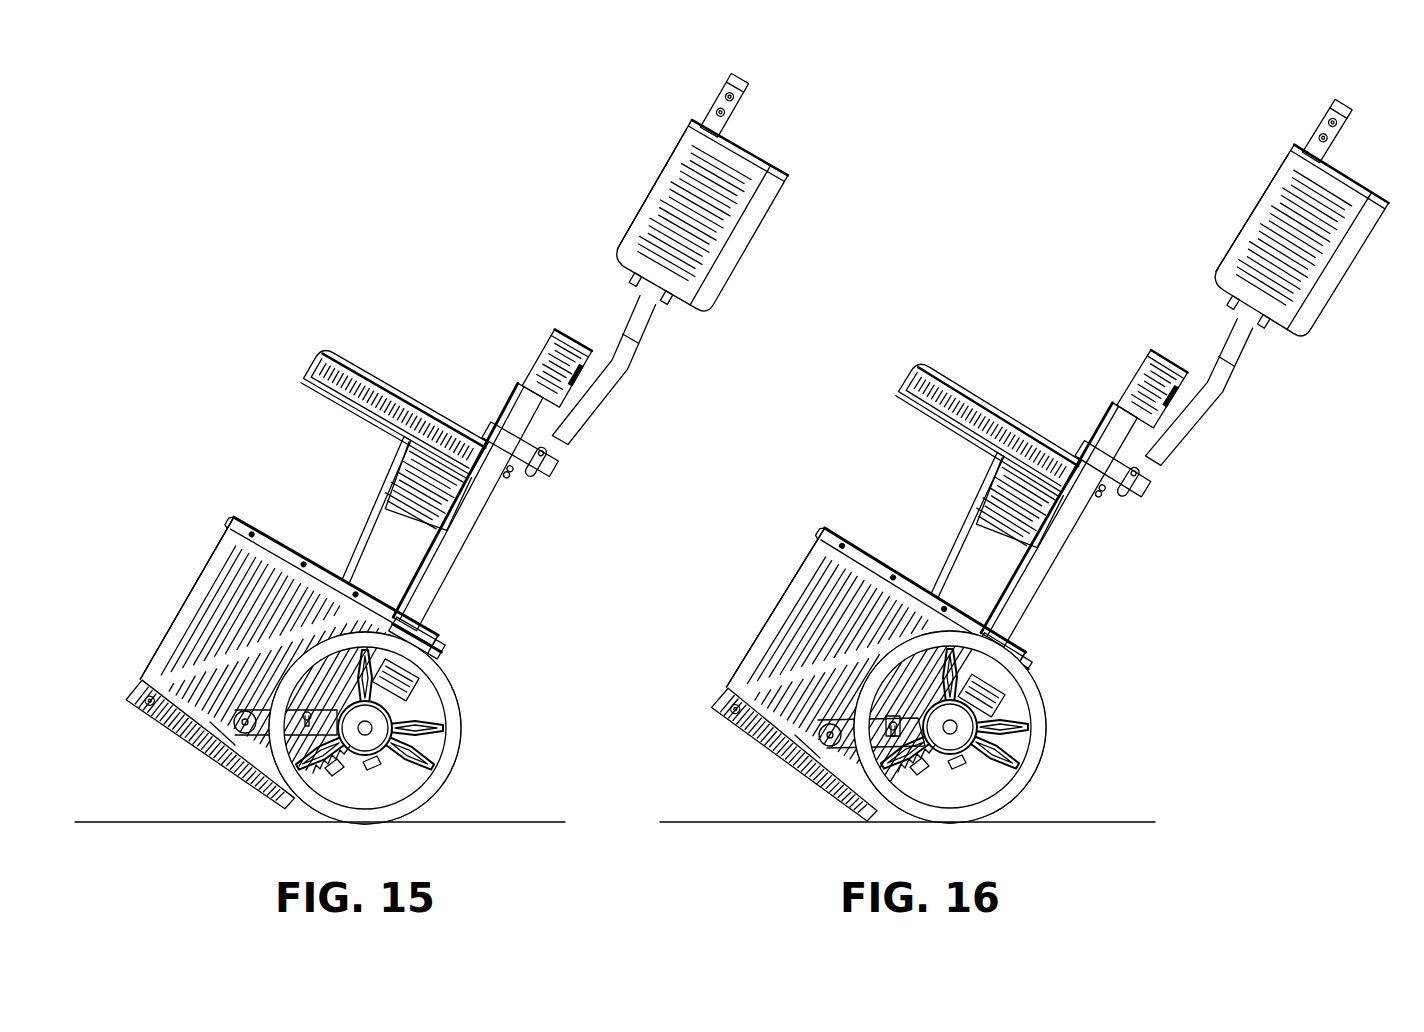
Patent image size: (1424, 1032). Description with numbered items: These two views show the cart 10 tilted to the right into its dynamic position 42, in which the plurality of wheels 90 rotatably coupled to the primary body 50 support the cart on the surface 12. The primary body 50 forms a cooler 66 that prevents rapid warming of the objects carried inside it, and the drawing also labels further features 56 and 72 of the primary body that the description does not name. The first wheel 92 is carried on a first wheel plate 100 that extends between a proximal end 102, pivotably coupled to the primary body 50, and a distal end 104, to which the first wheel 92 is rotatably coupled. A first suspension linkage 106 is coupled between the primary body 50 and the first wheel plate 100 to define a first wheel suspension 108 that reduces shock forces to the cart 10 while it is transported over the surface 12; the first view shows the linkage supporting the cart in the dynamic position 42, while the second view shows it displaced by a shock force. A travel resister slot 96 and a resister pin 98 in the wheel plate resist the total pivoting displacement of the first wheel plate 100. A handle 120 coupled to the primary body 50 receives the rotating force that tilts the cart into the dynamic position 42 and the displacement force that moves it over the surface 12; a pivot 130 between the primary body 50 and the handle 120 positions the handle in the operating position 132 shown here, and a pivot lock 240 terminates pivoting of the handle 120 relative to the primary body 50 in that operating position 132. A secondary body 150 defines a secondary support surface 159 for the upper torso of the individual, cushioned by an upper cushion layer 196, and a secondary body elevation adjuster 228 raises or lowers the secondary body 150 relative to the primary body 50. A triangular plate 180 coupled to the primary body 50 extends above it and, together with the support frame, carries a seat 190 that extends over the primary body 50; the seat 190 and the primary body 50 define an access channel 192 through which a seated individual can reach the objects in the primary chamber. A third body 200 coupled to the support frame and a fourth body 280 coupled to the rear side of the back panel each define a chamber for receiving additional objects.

In FIG. 15, the cart 10 is at (314, 63).
In FIG. 16, the cart 10 is at (1047, 63).
In FIG. 15, the surface 12 is at (520, 822).
In FIG. 16, the surface 12 is at (1125, 822).
In FIG. 15, the dynamic position 42 is at (315, 147).
In FIG. 16, the dynamic position 42 is at (1048, 147).
In FIG. 15, the primary body 50 is at (168, 612).
In FIG. 16, the primary body 50 is at (768, 612).
In FIG. 15, the upper edge of panel 56 is at (256, 515).
In FIG. 16, the upper edge of panel 56 is at (840, 528).
In FIG. 15, the cooler 66 is at (197, 566).
In FIG. 16, the cooler 66 is at (797, 575).
In FIG. 15, the toe plate 72 is at (165, 735).
In FIG. 16, the toe plate 72 is at (786, 754).
In FIG. 15, the plurality of wheels 90 is at (460, 752).
In FIG. 16, the plurality of wheels 90 is at (1048, 758).
In FIG. 15, the first wheel 92 is at (462, 703).
In FIG. 16, the first wheel 92 is at (1050, 718).
In FIG. 16, the travel resister slot 96 is at (888, 722).
In FIG. 15, the resister pin 98 is at (307, 719).
In FIG. 16, the resister pin 98 is at (886, 732).
In FIG. 15, the first wheel plate 100 is at (262, 727).
In FIG. 16, the first wheel plate 100 is at (843, 735).
In FIG. 15, the proximal end 102 is at (222, 742).
In FIG. 16, the proximal end 102 is at (815, 742).
In FIG. 15, the distal end 104 is at (300, 775).
In FIG. 16, the distal end 104 is at (916, 758).
In FIG. 15, the first suspension linkage 106 is at (372, 768).
In FIG. 16, the first suspension linkage 106 is at (912, 775).
In FIG. 15, the first wheel suspension 108 is at (340, 767).
In FIG. 16, the first wheel suspension 108 is at (950, 775).
In FIG. 15, the handle 120 is at (725, 88).
In FIG. 16, the handle 120 is at (1333, 112).
In FIG. 15, the pivot 130 is at (548, 452).
In FIG. 16, the pivot 130 is at (1128, 481).
In FIG. 15, the operating position 132 is at (292, 100).
In FIG. 16, the operating position 132 is at (1023, 100).
In FIG. 15, the secondary body 150 is at (727, 282).
In FIG. 16, the secondary body 150 is at (1335, 282).
In FIG. 16, the secondary support surface 159 is at (1240, 220).
In FIG. 16, the triangular plate 180 is at (985, 567).
In FIG. 15, the seat 190 is at (375, 350).
In FIG. 16, the seat 190 is at (977, 396).
In FIG. 15, the access channel 192 is at (300, 429).
In FIG. 15, the upper cushion layer 196 is at (665, 182).
In FIG. 16, the upper cushion layer 196 is at (1262, 190).
In FIG. 15, the third body 200 is at (468, 522).
In FIG. 16, the third body 200 is at (1055, 550).
In FIG. 15, the secondary body elevation adjuster 228 is at (643, 207).
In FIG. 15, the pivot lock 240 is at (554, 330).
In FIG. 16, the pivot lock 240 is at (1150, 355).
In FIG. 15, the fourth body 280 is at (438, 634).
In FIG. 16, the fourth body 280 is at (1028, 652).